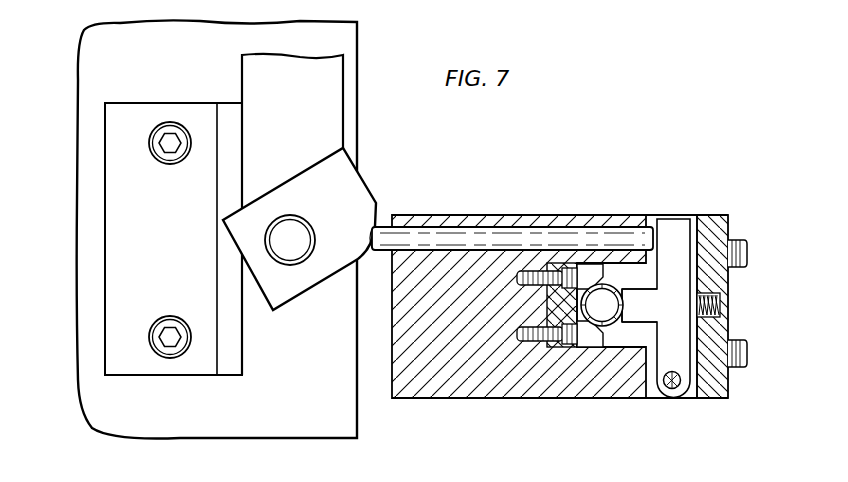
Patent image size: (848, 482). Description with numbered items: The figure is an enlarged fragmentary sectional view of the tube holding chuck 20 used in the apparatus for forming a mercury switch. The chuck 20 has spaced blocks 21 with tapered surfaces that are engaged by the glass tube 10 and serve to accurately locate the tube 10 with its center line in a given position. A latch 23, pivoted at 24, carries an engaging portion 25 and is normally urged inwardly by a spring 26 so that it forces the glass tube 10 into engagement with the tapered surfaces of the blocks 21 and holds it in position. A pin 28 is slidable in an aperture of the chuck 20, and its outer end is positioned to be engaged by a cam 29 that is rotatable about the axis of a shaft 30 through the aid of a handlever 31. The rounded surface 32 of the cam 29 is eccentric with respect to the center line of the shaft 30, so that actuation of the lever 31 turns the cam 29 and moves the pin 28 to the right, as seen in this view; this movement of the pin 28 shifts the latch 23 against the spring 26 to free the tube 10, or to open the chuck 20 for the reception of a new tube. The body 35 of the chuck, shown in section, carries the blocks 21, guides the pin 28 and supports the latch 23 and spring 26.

The glass tube 10 is at (622, 306).
The chuck 20 is at (647, 206).
The spaced blocks 21 is at (585, 270).
The latch 23 is at (675, 230).
The pivot 24 is at (674, 389).
The engaging portion 25 is at (633, 324).
The spring 26 is at (720, 311).
The pin 28 is at (507, 232).
The cam 29 is at (355, 186).
The shaft 30 is at (297, 252).
The handlever 31 is at (330, 83).
The rounded surface 32 is at (377, 218).
The body 35 is at (458, 400).